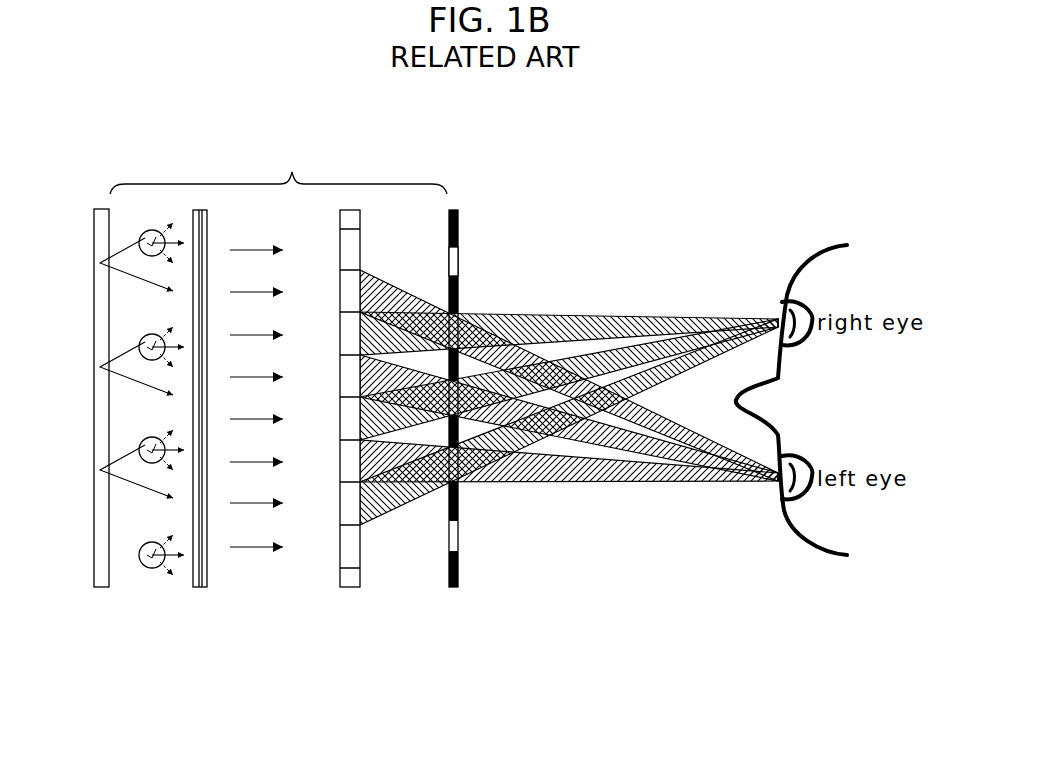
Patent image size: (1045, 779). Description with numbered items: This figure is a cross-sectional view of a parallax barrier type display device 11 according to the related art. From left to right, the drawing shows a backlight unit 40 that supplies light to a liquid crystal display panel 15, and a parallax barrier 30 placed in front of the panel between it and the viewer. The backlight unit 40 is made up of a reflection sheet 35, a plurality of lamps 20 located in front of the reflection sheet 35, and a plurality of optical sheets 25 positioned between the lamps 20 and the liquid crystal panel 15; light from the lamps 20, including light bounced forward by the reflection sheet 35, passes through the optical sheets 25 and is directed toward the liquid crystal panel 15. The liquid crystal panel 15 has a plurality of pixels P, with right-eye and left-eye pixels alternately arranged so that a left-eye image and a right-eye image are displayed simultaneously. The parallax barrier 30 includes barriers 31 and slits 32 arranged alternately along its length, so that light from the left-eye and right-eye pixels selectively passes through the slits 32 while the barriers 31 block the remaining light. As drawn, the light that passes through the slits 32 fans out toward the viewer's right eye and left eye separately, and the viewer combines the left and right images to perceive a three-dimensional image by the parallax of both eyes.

The parallax barrier type display device 11 is at (425, 176).
The liquid crystal display panel 15 is at (352, 217).
The lamps 20 is at (152, 218).
The optical sheets 25 is at (207, 590).
The parallax barrier 30 is at (540, 365).
The barriers 31 is at (458, 216).
The slits 32 is at (455, 262).
The reflection sheet 35 is at (100, 212).
The backlight unit 40 is at (202, 625).